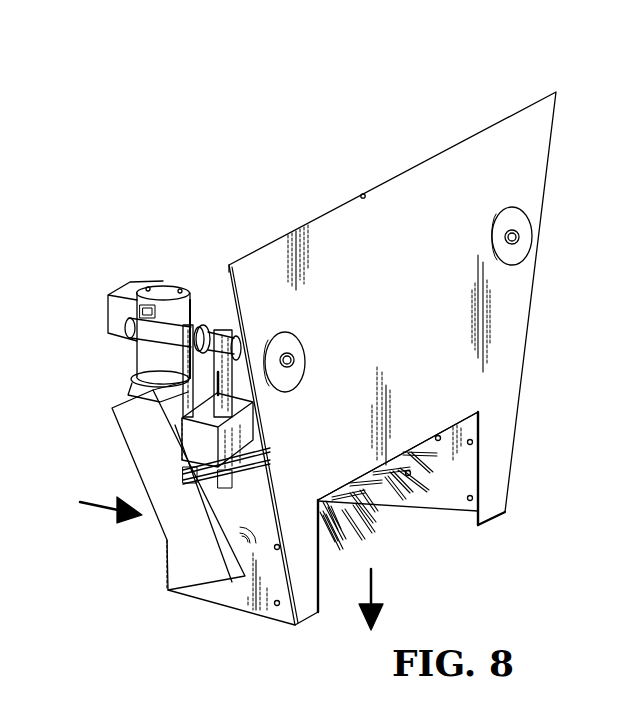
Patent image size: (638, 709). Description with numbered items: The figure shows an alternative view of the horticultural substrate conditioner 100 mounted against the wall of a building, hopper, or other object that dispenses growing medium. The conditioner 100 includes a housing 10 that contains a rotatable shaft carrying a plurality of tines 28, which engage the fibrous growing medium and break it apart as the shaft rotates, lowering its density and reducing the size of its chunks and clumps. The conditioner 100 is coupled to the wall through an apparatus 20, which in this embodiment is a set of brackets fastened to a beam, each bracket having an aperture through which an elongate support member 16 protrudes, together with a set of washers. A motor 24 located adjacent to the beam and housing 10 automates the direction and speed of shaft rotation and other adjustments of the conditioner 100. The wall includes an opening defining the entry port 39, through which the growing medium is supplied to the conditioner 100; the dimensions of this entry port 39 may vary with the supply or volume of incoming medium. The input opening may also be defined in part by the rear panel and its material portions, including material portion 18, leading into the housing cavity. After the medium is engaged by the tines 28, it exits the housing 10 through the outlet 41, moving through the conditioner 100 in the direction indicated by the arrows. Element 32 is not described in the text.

The housing 10 is at (455, 497).
The elongate support member 16 is at (132, 326).
The material portion 18 is at (530, 236).
The apparatus 20 is at (212, 317).
The motor 24 is at (167, 283).
The tines 28 is at (368, 523).
The panel 32 is at (338, 205).
The entry port 39 is at (447, 478).
The outlet 41 is at (344, 568).
The horticultural substrate conditioner 100 is at (148, 549).